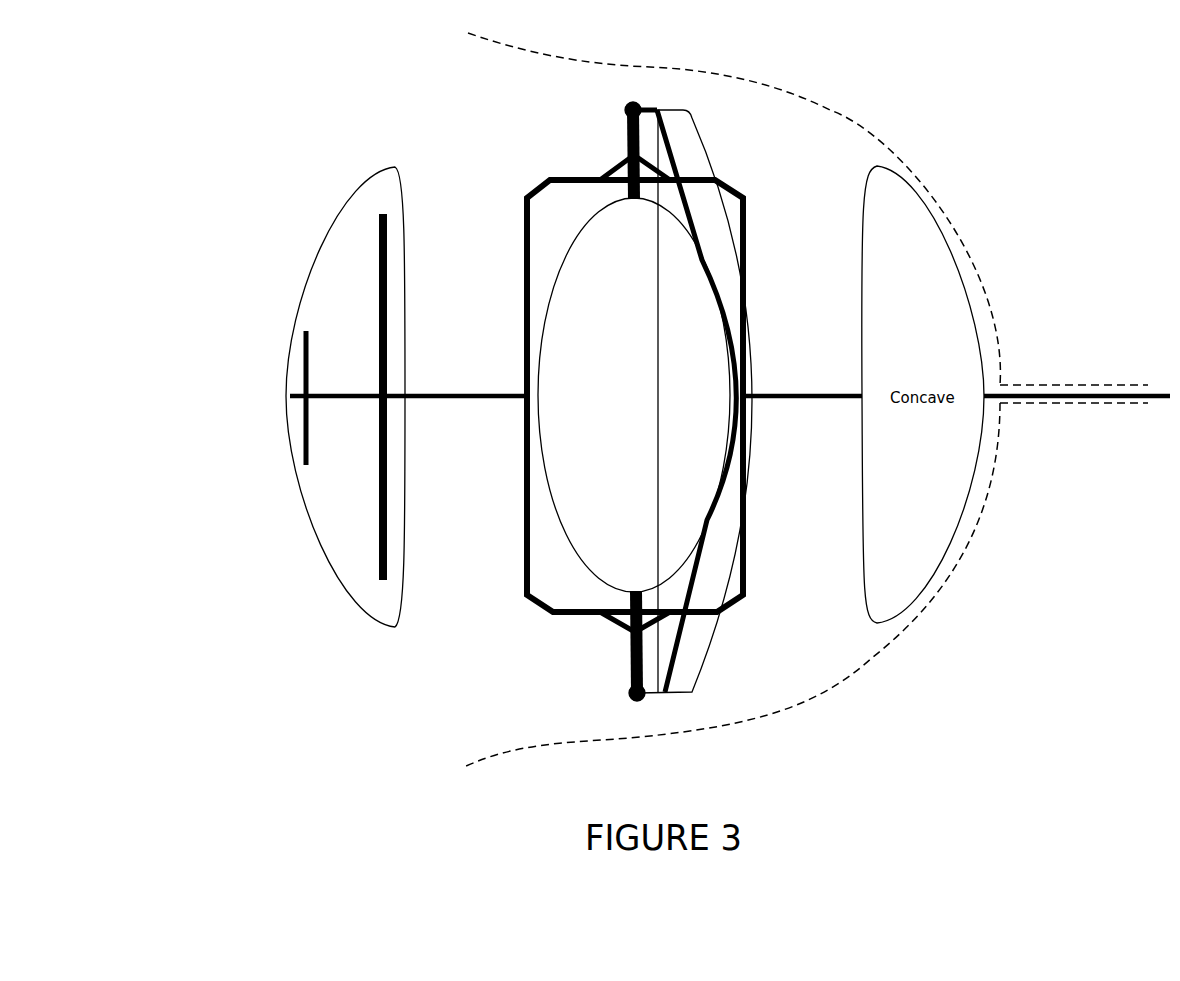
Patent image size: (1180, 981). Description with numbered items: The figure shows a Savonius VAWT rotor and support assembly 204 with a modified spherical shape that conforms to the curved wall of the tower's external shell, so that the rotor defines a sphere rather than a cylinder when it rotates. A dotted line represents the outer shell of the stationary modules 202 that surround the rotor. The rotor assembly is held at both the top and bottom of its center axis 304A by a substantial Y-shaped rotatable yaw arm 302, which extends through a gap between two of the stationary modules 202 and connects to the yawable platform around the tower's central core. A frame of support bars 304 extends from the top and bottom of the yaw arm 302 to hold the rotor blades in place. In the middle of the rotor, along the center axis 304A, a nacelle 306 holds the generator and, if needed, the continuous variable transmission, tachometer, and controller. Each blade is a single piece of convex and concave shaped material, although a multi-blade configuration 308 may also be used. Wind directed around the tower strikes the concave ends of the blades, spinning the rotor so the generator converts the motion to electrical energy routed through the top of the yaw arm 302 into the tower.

The stationary modules 202 is at (763, 717).
The Savonius VAWT rotor and support assembly 204 is at (258, 112).
The rotatable yaw arm 302 is at (663, 108).
The frame of support bars 304 is at (550, 612).
The center axis 304A is at (627, 145).
The nacelle 306 is at (634, 395).
The multi-blade configuration 308 is at (287, 397).